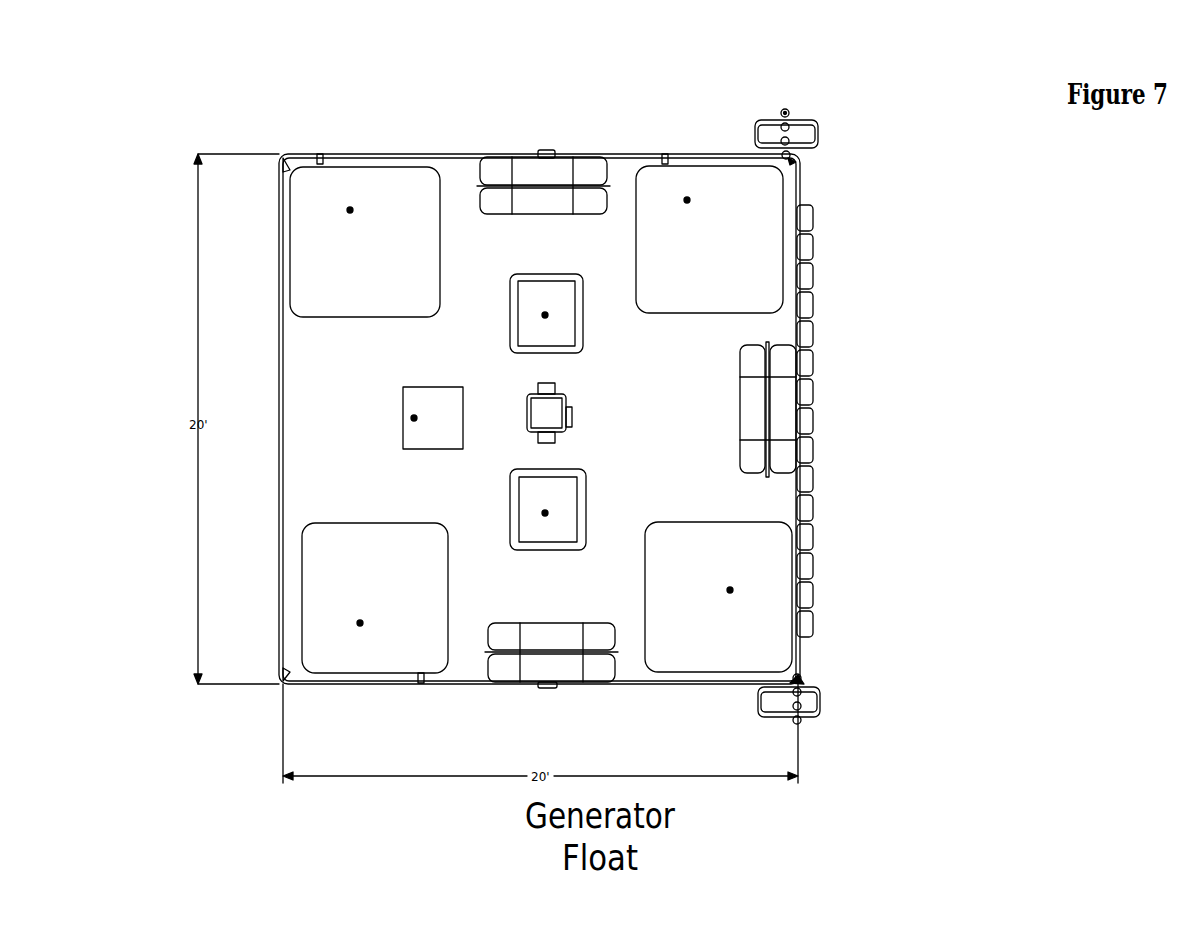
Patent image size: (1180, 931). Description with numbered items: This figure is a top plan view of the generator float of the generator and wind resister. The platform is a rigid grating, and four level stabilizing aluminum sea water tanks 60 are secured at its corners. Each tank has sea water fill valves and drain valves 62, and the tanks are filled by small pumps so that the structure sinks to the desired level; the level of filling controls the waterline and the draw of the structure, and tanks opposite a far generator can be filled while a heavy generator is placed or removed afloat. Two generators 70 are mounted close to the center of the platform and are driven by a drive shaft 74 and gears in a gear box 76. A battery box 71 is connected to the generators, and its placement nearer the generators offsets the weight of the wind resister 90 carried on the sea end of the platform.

The level stabilizing tank 60 is at (720, 401).
The sea water fill valve and drain valve 62 is at (594, 422).
The generator 70 is at (502, 412).
The battery box 71 is at (380, 418).
The drive shaft 74 is at (763, 174).
The gear box 76 is at (556, 394).
The wind resister 90 is at (728, 405).